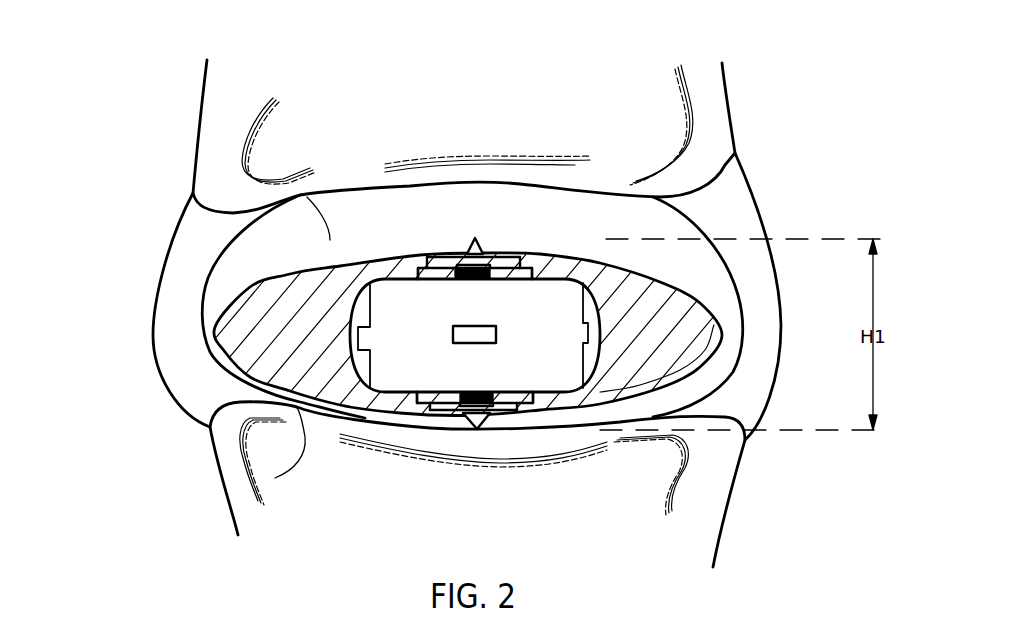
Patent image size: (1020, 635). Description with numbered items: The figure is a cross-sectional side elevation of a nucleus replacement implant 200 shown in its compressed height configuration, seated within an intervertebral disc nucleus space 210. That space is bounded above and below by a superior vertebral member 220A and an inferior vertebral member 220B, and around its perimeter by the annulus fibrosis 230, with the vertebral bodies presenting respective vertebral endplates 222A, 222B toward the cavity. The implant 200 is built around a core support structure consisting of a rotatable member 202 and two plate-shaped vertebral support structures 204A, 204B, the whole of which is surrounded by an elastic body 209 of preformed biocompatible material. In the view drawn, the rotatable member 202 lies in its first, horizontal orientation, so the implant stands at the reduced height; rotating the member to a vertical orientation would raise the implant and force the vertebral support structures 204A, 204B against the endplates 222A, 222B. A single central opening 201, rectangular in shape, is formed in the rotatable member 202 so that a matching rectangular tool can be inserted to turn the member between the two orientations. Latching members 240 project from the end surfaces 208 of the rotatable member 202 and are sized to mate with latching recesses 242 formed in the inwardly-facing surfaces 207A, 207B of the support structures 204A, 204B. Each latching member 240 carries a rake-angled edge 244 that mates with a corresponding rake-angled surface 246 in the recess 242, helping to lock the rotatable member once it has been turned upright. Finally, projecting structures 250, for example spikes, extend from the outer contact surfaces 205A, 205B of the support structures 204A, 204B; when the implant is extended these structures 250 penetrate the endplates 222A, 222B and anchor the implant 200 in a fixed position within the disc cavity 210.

The nucleus replacement implant 200 is at (702, 297).
The central opening 201 is at (453, 334).
The rotatable member 202 is at (562, 328).
The vertebral support structure 204A is at (514, 260).
The vertebral support structure 204B is at (440, 408).
The outer contact surface 205A is at (440, 262).
The outer contact surface 205B is at (505, 408).
The inwardly-facing surface 207A is at (440, 279).
The inwardly-facing surface 207B is at (513, 392).
The end surface 208 is at (370, 300).
The elastic body 209 is at (255, 322).
The intervertebral disc nucleus space 210 is at (240, 267).
The superior vertebral member 220A is at (493, 86).
The inferior vertebral member 220B is at (500, 554).
The vertebral endplate 222A is at (330, 240).
The vertebral endplate 222B is at (275, 478).
The annulus fibrosis 230 is at (180, 269).
The latching member 240 is at (600, 341).
The latching recess 242 is at (492, 262).
The rake-angled edge 244 is at (600, 306).
The rake-angled surface 246 is at (433, 258).
The projecting structure 250 is at (470, 240).